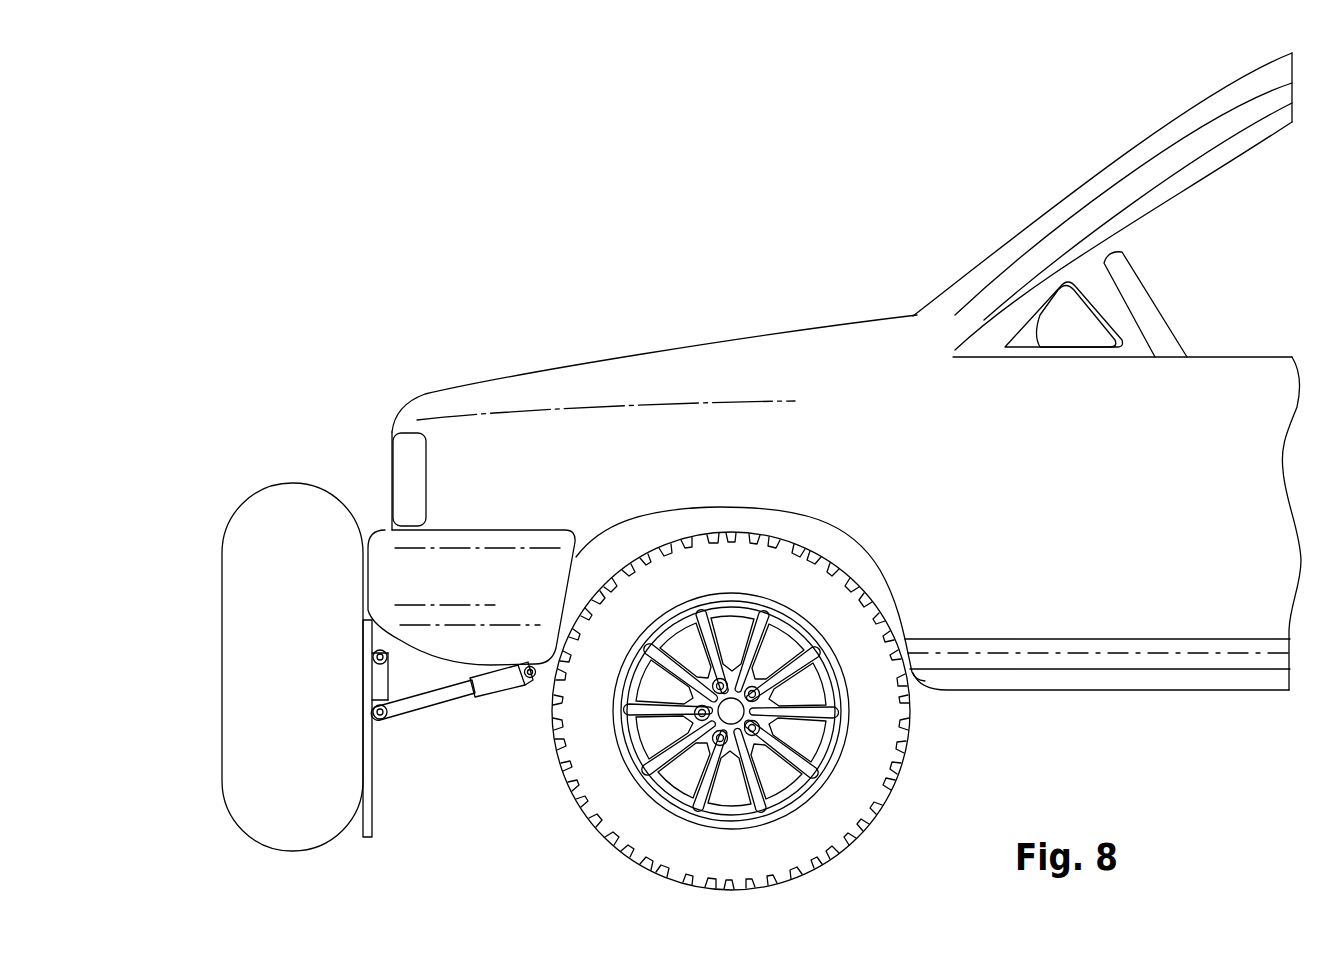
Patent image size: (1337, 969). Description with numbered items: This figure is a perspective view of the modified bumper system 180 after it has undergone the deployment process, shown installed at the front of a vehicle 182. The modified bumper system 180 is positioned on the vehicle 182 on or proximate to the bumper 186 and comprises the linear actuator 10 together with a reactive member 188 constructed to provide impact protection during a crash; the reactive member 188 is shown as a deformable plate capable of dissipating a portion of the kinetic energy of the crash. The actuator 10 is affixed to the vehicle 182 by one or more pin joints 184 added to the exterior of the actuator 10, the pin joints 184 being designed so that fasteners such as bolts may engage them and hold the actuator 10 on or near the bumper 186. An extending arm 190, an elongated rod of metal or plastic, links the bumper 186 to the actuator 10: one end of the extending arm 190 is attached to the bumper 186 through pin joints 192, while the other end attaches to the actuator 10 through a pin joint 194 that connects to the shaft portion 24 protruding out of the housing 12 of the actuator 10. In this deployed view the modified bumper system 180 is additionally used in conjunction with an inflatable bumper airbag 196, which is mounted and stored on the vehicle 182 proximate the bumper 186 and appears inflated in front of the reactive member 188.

The actuator 10 is at (507, 690).
The housing 12 is at (484, 697).
The shaft portion 24 is at (421, 710).
The modified bumper system 180 is at (402, 727).
The vehicle 182 is at (777, 335).
The pin joints 184 is at (532, 690).
The bumper 186 is at (385, 547).
The reactive member 188 is at (375, 820).
The extending arm 190 is at (383, 692).
The pin joints 192 is at (387, 655).
The pin joint 194 is at (380, 723).
The inflatable bumper airbag 196 is at (258, 513).